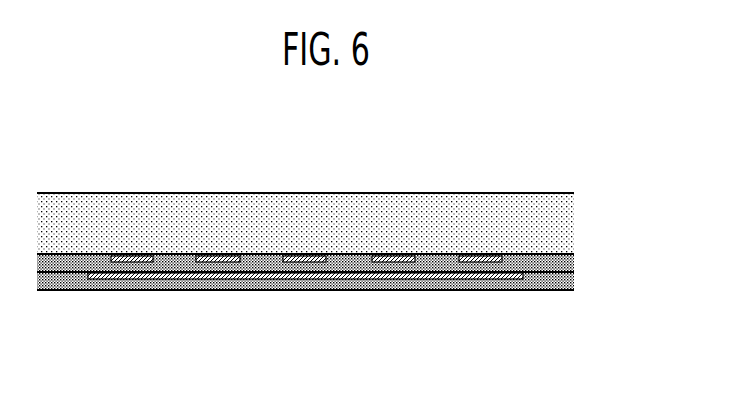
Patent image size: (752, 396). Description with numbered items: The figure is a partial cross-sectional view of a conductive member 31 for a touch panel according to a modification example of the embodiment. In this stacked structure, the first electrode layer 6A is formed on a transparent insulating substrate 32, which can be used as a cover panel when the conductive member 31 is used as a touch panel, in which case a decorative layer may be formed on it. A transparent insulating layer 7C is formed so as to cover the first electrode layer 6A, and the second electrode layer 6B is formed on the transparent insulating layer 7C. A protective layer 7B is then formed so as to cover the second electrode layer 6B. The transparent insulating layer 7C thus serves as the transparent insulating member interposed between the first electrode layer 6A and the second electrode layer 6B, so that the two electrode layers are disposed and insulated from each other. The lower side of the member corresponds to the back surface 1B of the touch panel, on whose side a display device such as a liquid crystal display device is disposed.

The conductive member for a touch panel 31 is at (548, 177).
The transparent insulating substrate 32 is at (567, 219).
The transparent insulating layer 7C is at (567, 262).
The protective layer 7B is at (573, 280).
The first electrode layer 6A is at (131, 253).
The second electrode layer 6B is at (170, 280).
The back surface 1B is at (368, 278).